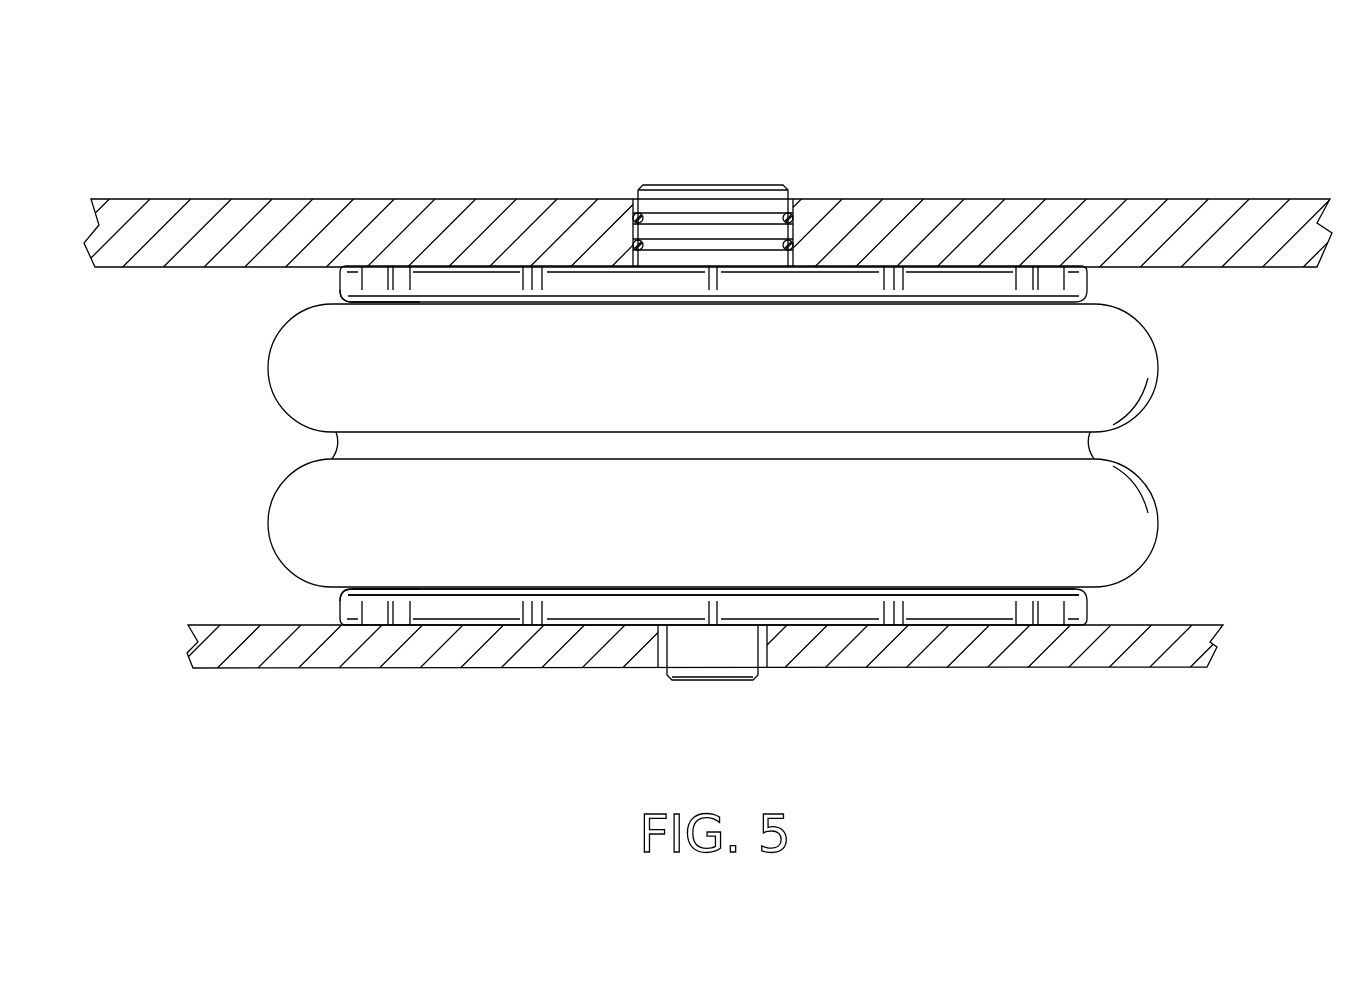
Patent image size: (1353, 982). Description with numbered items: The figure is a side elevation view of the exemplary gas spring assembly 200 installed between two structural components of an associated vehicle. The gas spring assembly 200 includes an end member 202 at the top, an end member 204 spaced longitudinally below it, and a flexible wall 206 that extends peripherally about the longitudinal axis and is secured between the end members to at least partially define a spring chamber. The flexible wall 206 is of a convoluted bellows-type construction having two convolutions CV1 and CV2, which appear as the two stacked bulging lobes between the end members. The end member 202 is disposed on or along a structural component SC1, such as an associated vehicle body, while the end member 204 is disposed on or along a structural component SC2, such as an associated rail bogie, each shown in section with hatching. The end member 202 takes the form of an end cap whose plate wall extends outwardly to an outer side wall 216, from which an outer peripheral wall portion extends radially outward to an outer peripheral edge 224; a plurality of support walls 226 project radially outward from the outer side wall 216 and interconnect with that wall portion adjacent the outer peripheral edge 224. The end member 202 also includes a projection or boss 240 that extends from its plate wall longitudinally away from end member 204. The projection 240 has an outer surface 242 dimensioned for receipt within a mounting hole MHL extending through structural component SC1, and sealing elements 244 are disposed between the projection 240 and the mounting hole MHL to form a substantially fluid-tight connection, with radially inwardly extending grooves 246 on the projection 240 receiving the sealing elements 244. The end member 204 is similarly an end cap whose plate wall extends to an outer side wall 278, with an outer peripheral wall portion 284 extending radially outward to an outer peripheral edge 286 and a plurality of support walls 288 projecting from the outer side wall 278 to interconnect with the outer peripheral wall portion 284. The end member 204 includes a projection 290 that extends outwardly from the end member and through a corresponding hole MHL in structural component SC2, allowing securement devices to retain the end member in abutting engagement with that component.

The gas spring assembly 200 is at (1215, 350).
The end member 202 is at (582, 193).
The end member 204 is at (582, 673).
The flexible wall 206 is at (682, 445).
The outer side wall 216 is at (473, 280).
The outer peripheral edge 224 is at (340, 295).
The support walls 226 is at (400, 280).
The projection 240 is at (689, 163).
The outer surface 242 is at (665, 200).
The sealing elements 244 is at (636, 247).
The grooves 246 is at (728, 247).
The outer side wall 278 is at (475, 612).
The outer peripheral wall portion 284 is at (585, 595).
The outer peripheral edge 286 is at (340, 597).
The support walls 288 is at (400, 615).
The projection 290 is at (725, 658).
The structural component SC1 is at (200, 215).
The structural component SC2 is at (285, 650).
The convolution CV1 is at (290, 375).
The convolution CV2 is at (290, 512).
The mounting hole MHL is at (797, 232).